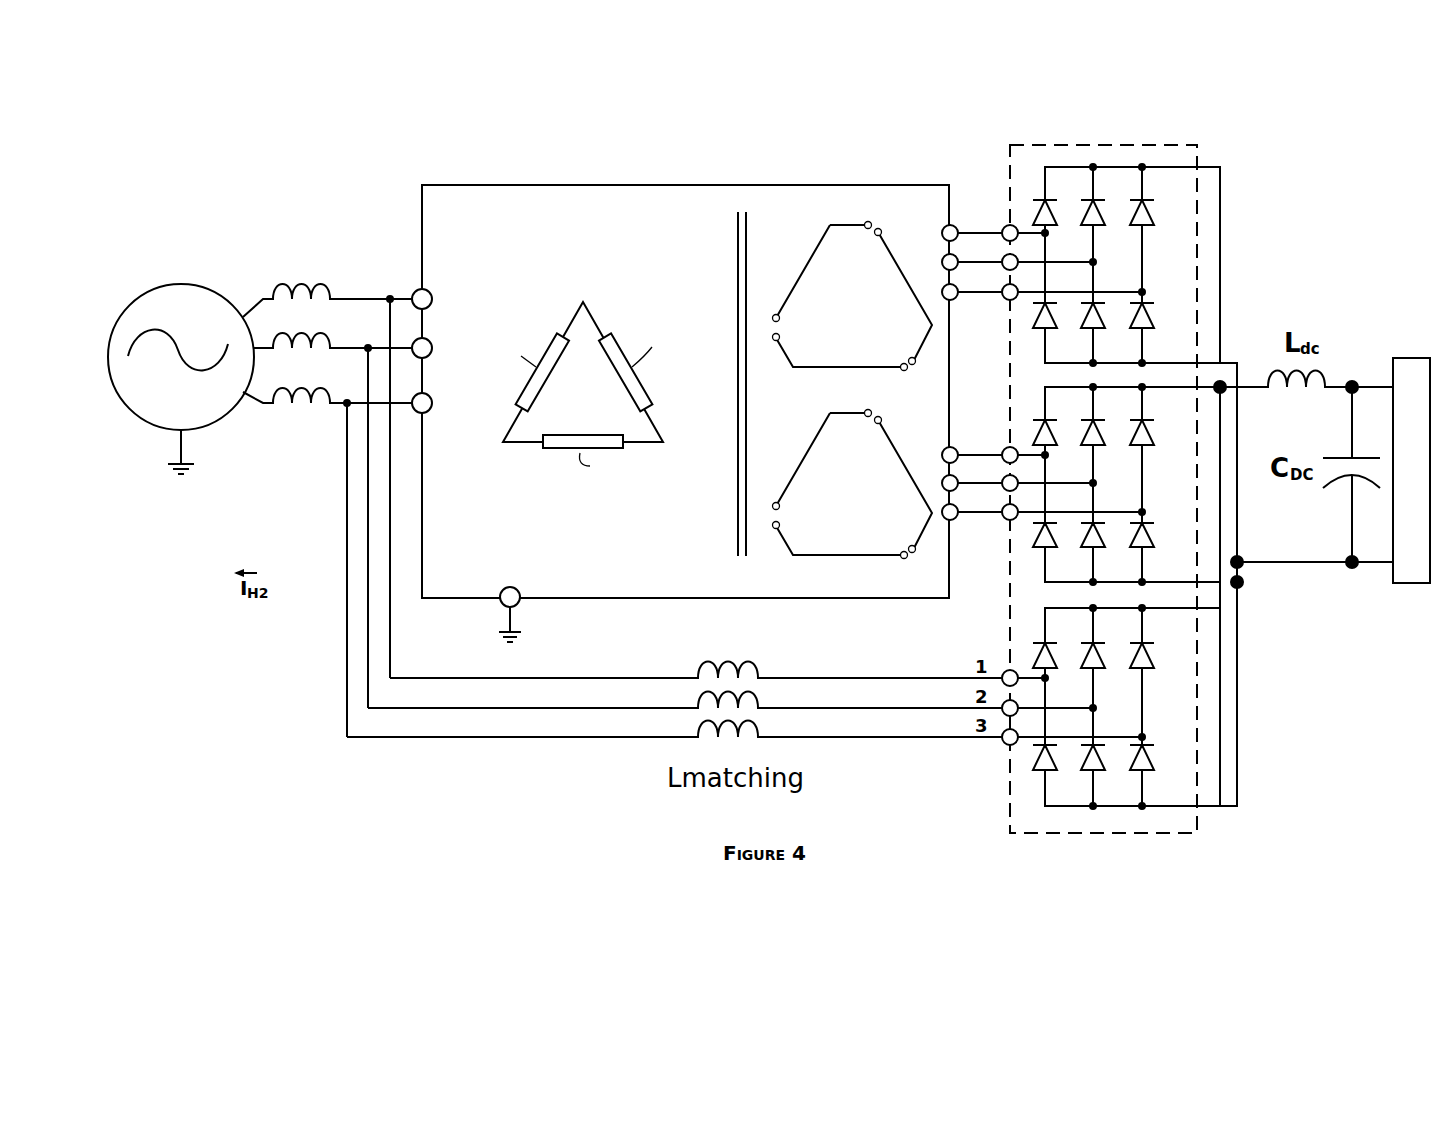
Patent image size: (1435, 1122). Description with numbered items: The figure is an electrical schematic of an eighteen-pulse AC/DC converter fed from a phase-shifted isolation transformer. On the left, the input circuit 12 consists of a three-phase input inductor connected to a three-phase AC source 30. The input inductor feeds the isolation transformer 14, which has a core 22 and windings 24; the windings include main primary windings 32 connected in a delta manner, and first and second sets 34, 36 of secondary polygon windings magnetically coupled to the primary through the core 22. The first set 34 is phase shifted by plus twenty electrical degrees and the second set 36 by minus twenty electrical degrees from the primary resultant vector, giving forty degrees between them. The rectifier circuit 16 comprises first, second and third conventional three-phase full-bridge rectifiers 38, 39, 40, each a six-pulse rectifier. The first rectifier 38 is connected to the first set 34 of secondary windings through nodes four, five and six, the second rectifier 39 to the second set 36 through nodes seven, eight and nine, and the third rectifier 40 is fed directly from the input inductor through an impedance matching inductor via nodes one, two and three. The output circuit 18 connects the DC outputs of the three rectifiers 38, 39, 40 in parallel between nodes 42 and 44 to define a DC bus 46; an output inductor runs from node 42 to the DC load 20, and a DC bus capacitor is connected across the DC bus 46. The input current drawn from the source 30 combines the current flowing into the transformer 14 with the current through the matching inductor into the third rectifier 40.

The input circuit 12 is at (305, 412).
The isolation transformer 14 is at (694, 387).
The rectifier circuit 16 is at (1072, 142).
The output circuit 18 is at (1349, 576).
The load 20 is at (1410, 588).
The core 22 is at (743, 562).
The windings 24 is at (641, 574).
The three-phase AC source 30 is at (192, 283).
The main primary windings 32 is at (540, 318).
The first set of secondary polygon windings 34 is at (801, 246).
The second set of secondary polygon windings 36 is at (841, 558).
The first three-phase rectifier 38 is at (1180, 253).
The second three-phase rectifier 39 is at (1178, 466).
The third three-phase rectifier 40 is at (1180, 716).
The node 42 is at (1225, 380).
The node 44 is at (1244, 587).
The DC bus 46 is at (1343, 378).